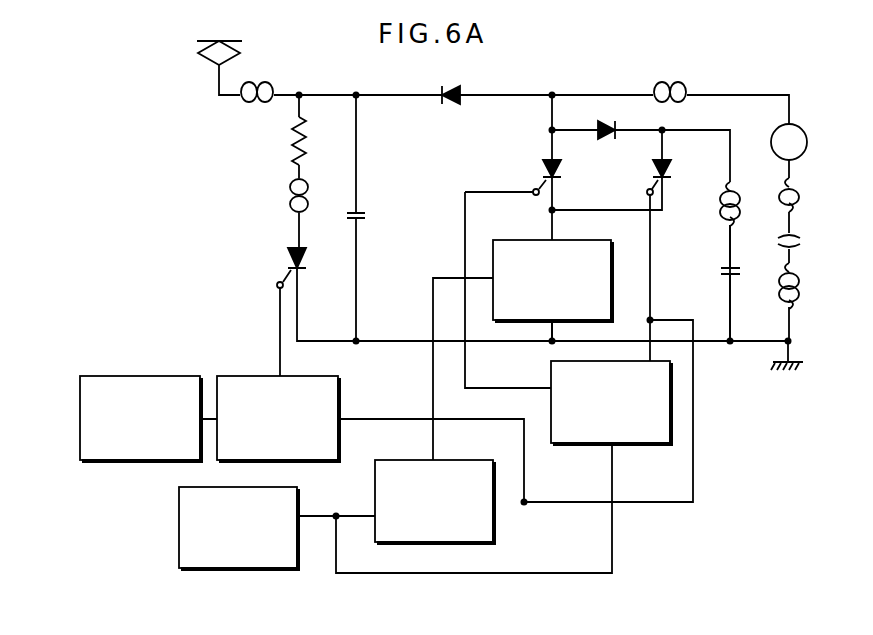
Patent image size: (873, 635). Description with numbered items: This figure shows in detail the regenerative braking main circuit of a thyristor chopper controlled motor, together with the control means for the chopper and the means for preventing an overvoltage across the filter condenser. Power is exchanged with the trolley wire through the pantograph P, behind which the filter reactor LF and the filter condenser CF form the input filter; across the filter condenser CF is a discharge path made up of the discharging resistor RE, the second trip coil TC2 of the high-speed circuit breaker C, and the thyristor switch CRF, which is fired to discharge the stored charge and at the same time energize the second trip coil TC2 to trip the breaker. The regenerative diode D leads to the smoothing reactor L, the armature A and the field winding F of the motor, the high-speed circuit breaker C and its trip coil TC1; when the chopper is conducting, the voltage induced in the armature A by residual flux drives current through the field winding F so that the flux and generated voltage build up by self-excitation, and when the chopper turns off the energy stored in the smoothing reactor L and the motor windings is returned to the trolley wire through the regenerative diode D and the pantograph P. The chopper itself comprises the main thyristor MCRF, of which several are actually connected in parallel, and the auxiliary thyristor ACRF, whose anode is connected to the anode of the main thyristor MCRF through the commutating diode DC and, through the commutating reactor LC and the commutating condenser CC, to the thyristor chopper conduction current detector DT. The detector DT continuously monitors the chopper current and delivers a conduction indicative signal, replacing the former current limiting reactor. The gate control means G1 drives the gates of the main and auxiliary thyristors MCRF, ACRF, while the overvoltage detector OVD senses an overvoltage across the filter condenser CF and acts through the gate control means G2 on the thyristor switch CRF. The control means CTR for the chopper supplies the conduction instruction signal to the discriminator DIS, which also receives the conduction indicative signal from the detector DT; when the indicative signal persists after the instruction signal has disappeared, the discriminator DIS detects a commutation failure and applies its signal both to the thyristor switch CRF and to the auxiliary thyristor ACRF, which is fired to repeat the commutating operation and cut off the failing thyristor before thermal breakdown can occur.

The pantograph P is at (188, 56).
The filter reactor LF is at (252, 85).
The discharging resistor RE is at (288, 142).
The second trip coil TC2 is at (293, 202).
The thyristor switch CRF is at (282, 262).
The filter condenser CF is at (366, 216).
The regenerative diode D is at (443, 121).
The commutating diode DC is at (598, 117).
The main thyristor MCRF is at (545, 166).
The auxiliary thyristor ACRF is at (685, 162).
The smoothing reactor L is at (666, 86).
The armature A is at (814, 142).
The field winding F is at (803, 199).
The high-speed circuit breaker C is at (806, 243).
The trip coil TC1 is at (803, 288).
The commutating reactor LC is at (722, 207).
The commutating condenser CC is at (719, 275).
The thyristor chopper conduction current detector DT is at (637, 251).
The gate control means G1 is at (678, 392).
The gate control means G2 is at (345, 384).
The overvoltage detector OVD is at (74, 420).
The discriminator DIS is at (500, 532).
The control means CTR is at (233, 569).